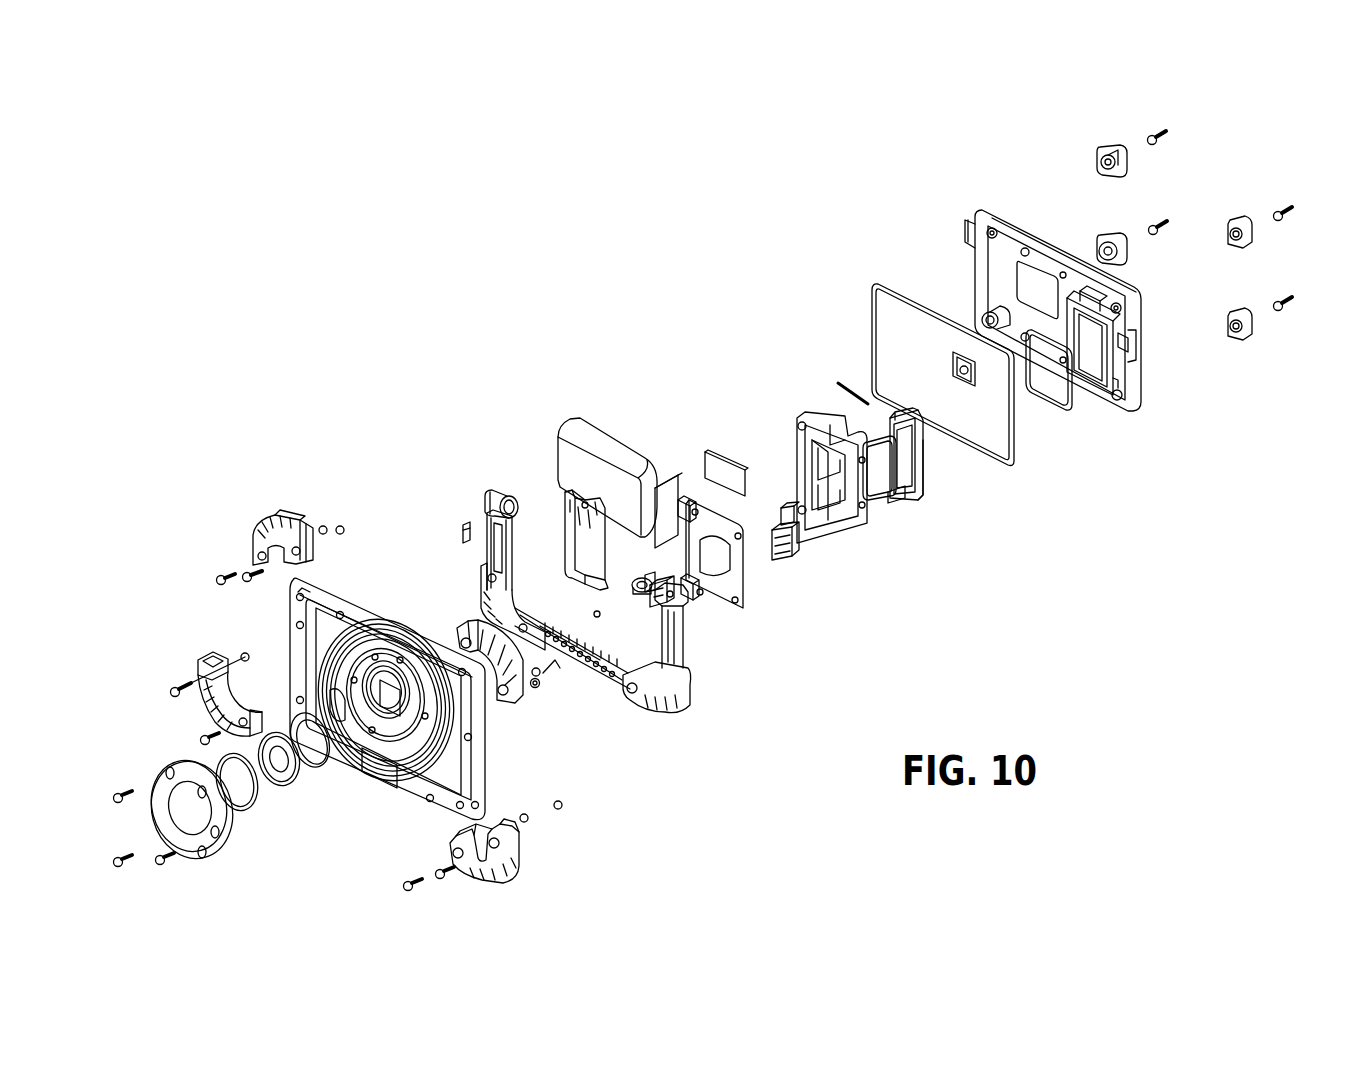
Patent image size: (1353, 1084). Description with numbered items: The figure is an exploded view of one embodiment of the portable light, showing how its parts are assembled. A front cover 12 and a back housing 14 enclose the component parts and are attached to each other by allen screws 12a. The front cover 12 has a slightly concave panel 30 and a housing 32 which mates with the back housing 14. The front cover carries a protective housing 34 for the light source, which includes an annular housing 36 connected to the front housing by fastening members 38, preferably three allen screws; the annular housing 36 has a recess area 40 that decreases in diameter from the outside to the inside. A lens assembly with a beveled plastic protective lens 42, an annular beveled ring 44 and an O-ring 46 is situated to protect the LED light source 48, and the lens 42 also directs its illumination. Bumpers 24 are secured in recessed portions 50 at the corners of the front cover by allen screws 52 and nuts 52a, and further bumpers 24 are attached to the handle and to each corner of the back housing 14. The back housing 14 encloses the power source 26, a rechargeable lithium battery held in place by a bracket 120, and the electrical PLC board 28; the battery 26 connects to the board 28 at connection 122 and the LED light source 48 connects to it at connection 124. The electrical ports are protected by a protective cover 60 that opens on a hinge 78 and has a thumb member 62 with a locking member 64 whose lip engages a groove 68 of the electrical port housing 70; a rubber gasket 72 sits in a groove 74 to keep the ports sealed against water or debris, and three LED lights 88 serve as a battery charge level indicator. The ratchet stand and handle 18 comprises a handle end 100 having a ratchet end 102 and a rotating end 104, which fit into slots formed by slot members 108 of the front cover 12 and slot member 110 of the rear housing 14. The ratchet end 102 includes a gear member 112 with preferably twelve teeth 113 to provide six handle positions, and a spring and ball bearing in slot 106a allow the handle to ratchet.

The front cover 12 is at (492, 762).
The allen screws 12a is at (1170, 135).
The back housing 14 is at (1052, 303).
The ratchet stand and handle 18 is at (586, 631).
The bumpers 24 is at (1100, 150).
The power source 26 is at (578, 430).
The electrical PLC board 28 is at (722, 575).
The slightly concave panel 30 is at (363, 679).
The housing 32 is at (374, 615).
The protective housing 34 is at (268, 830).
The annular housing 36 is at (183, 809).
The fastening members 38 is at (116, 795).
The recess area 40 is at (165, 792).
The beveled plastic protective lens 42 is at (255, 795).
The annular beveled ring 44 is at (290, 775).
The O-ring 46 is at (322, 760).
The LED light source 48 is at (392, 675).
The recessed portions 50 is at (302, 590).
The allen screws 52 is at (220, 575).
The nuts 52a is at (344, 526).
The protective cover 60 is at (928, 465).
The thumb member 62 is at (905, 492).
The locking member 64 is at (895, 500).
The groove 68 is at (1082, 395).
The electrical port housing 70 is at (1115, 378).
The rubber gasket 72 is at (865, 451).
The groove 74 is at (925, 458).
The hinge 78 is at (852, 393).
The LED lights 88 is at (790, 558).
The handle end 100 is at (578, 660).
The ratchet end 102 is at (665, 565).
The rotating end 104 is at (508, 492).
The slot 106a is at (520, 712).
The slot members 108 is at (532, 690).
The slot member 110 is at (968, 232).
The gear member 112 is at (652, 604).
The teeth 113 is at (636, 580).
The bracket 120 is at (562, 540).
The connection 122 is at (685, 497).
The connection 124 is at (712, 596).